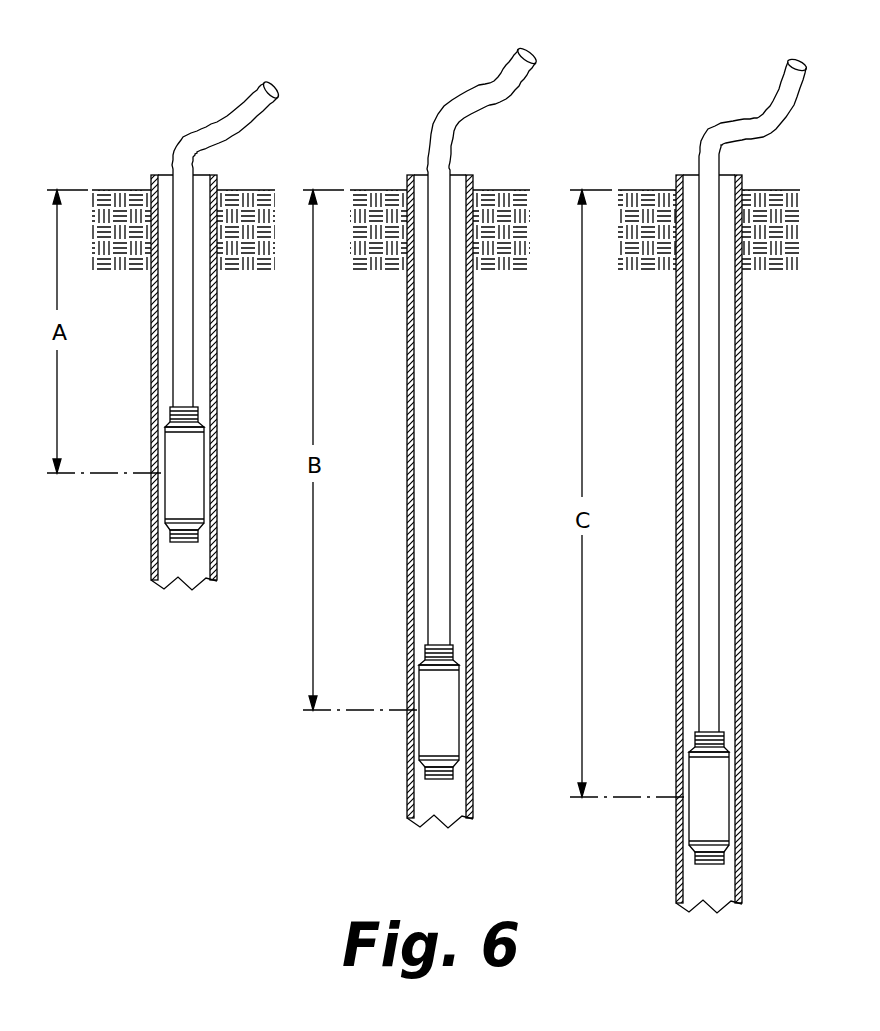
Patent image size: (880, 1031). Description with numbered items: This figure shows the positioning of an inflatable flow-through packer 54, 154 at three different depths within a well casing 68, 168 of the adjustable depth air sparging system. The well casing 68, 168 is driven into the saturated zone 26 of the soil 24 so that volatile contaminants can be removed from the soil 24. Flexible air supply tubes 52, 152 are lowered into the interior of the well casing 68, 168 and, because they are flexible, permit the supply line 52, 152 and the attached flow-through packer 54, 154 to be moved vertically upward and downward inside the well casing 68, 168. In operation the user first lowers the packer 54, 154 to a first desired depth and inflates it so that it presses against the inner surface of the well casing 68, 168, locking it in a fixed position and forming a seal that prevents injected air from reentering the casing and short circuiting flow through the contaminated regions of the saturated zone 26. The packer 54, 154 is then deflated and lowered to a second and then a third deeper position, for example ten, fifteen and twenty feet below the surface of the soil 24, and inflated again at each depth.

The soil 24 is at (118, 188).
The saturated zone 26 is at (111, 458).
The air supply tube 52 is at (481, 377).
The air supply tube 152 is at (243, 107).
The inflatable flow-through packer 54 is at (395, 646).
The inflatable flow-through packer 154 is at (165, 508).
The well casing 68 is at (489, 544).
The well casing 168 is at (742, 512).